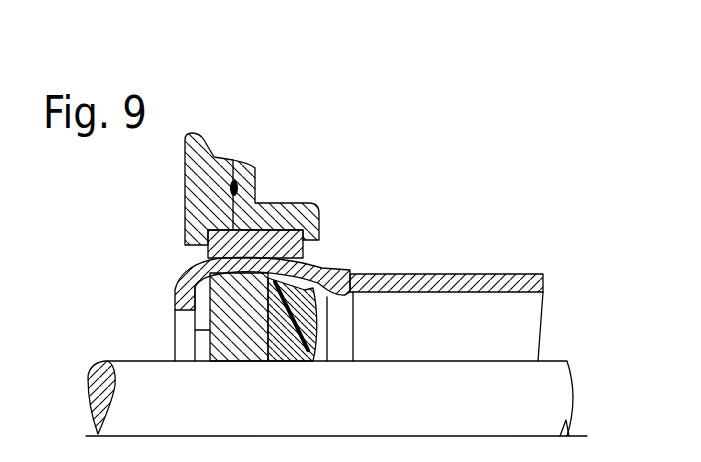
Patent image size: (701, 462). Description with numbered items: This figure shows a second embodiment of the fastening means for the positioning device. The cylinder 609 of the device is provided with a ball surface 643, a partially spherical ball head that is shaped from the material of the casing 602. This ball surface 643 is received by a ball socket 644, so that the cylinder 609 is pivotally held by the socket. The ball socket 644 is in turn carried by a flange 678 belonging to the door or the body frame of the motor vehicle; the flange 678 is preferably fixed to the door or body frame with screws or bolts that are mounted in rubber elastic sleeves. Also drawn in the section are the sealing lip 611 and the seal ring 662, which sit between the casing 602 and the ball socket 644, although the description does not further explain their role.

The casing 602 is at (447, 273).
The cylinder 609 is at (510, 273).
The sealing lip 611 is at (318, 293).
The ball surface 643 is at (322, 266).
The ball socket 644 is at (284, 248).
The seal ring 662 is at (223, 302).
The flange 678 is at (213, 156).